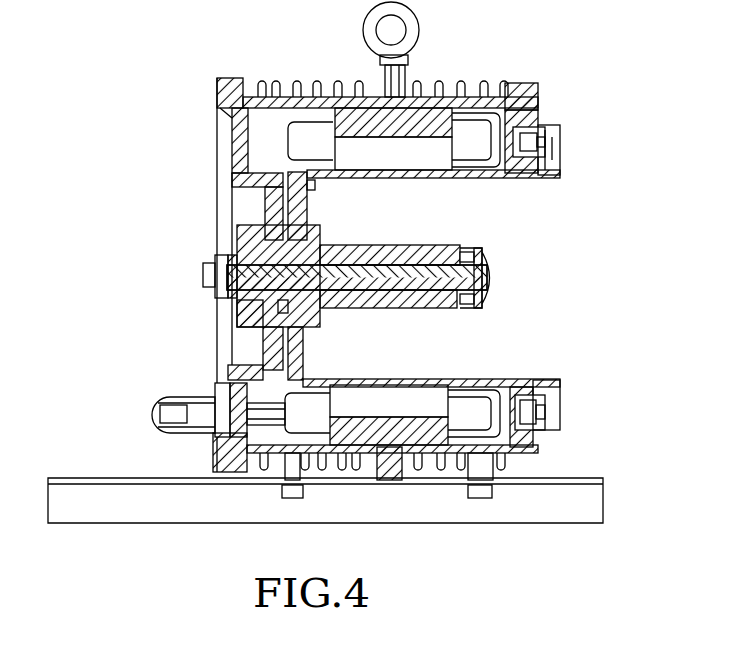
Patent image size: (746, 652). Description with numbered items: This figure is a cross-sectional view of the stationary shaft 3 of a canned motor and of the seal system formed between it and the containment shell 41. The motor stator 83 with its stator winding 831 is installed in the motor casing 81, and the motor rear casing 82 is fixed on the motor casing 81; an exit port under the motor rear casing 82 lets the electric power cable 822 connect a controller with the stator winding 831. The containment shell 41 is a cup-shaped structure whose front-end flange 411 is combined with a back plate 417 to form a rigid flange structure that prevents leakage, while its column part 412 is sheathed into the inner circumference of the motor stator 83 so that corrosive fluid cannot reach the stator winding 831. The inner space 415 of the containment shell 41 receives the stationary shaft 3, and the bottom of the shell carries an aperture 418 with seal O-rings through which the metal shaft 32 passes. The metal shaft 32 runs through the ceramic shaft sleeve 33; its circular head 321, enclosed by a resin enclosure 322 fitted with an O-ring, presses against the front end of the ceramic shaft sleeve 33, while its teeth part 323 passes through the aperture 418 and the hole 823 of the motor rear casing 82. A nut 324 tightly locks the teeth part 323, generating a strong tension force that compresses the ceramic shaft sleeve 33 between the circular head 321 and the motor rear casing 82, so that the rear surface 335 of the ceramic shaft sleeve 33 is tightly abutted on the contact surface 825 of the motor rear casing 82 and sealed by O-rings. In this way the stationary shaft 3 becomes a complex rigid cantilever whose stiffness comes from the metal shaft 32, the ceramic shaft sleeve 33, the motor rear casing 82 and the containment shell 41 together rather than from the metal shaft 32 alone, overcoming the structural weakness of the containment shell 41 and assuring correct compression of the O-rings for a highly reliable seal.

The stationary shaft 3 is at (237, 247).
The metal shaft 32 is at (367, 275).
The circular head 321 is at (482, 280).
The resin enclosure 322 is at (487, 257).
The teeth part 323 is at (202, 278).
The nut 324 is at (200, 265).
The ceramic shaft sleeve 33 is at (425, 300).
The rear surface 335 is at (237, 315).
The containment shell 41 is at (530, 180).
The flange 411 is at (560, 127).
The column part 412 is at (443, 178).
The inner space 415 is at (497, 362).
The back plate 417 is at (533, 82).
The aperture 418 is at (272, 232).
The motor casing 81 is at (443, 85).
The motor rear casing 82 is at (237, 83).
The electric power cable 822 is at (145, 407).
The hole 823 is at (235, 288).
The contact surface 825 is at (139, 391).
The motor stator 83 is at (355, 98).
The stator winding 831 is at (287, 140).